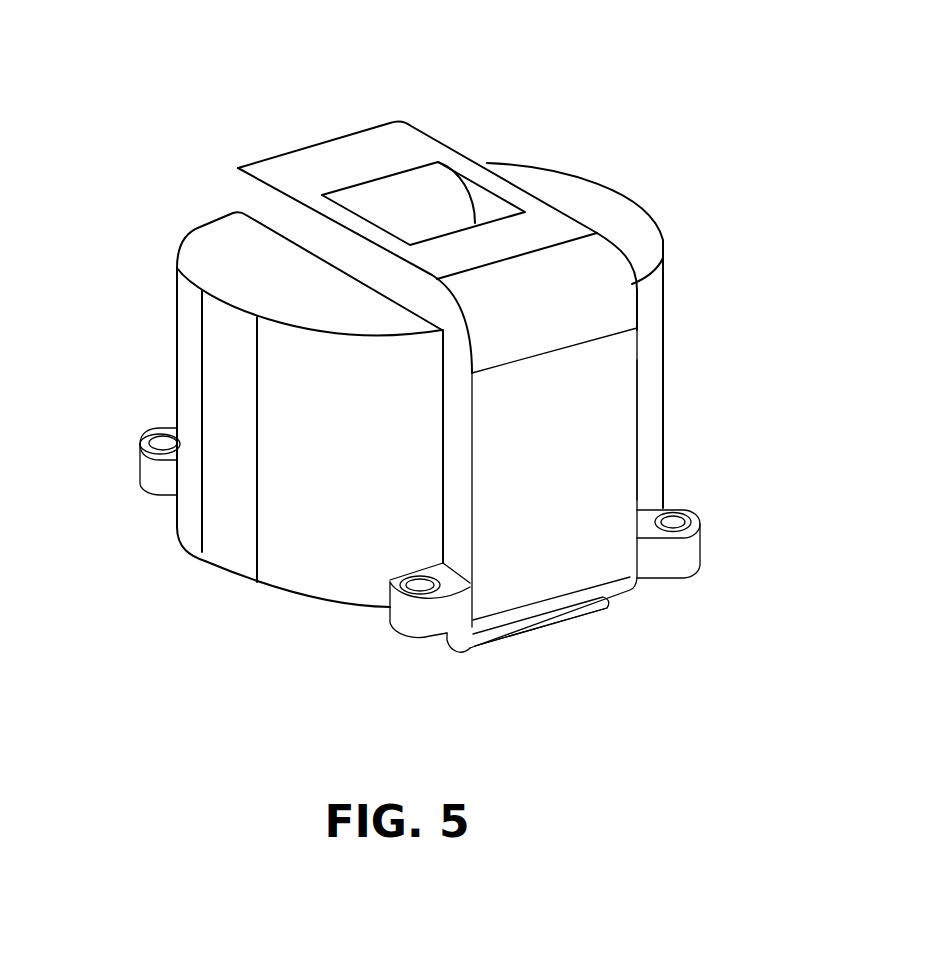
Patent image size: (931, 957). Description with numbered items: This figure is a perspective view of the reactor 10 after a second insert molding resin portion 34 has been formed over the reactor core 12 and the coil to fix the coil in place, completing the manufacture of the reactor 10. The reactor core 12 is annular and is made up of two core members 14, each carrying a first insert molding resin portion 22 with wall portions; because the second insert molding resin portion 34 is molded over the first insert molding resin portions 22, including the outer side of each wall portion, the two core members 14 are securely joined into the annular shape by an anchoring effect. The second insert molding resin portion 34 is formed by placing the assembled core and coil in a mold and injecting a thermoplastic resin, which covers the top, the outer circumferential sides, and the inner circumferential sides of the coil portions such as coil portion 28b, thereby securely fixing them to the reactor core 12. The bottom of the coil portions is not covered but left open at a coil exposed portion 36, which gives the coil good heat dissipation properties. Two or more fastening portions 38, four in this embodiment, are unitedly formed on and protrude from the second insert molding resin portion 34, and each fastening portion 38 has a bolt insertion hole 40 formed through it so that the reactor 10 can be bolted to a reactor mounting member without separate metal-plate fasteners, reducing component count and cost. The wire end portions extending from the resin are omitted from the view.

The reactor 10 is at (556, 148).
The reactor core 12 is at (419, 365).
The core member 14 is at (176, 318).
The first insert molding resin portion 22 is at (203, 252).
The coil portion 28b is at (543, 629).
The second insert molding resin portion 34 is at (370, 124).
The coil exposed portion 36 is at (594, 609).
The fastening portion 38 is at (152, 473).
The bolt insertion hole 40 is at (158, 438).